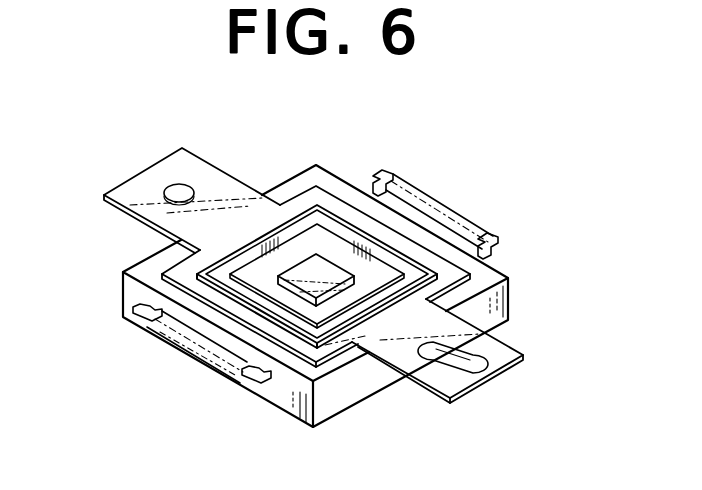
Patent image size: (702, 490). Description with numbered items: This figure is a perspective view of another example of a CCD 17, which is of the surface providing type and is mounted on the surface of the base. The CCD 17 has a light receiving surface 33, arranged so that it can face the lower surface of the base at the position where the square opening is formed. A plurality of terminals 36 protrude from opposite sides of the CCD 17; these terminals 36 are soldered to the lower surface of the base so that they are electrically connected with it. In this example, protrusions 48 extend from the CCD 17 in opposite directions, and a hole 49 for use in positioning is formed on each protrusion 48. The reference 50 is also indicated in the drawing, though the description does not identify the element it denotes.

The CCD 17 is at (511, 300).
The light receiving surface 33 is at (328, 272).
The terminals 36 is at (497, 240).
The protrusions 48 is at (161, 157).
The hole 49 is at (184, 185).
The mounting plate 50 is at (146, 239).